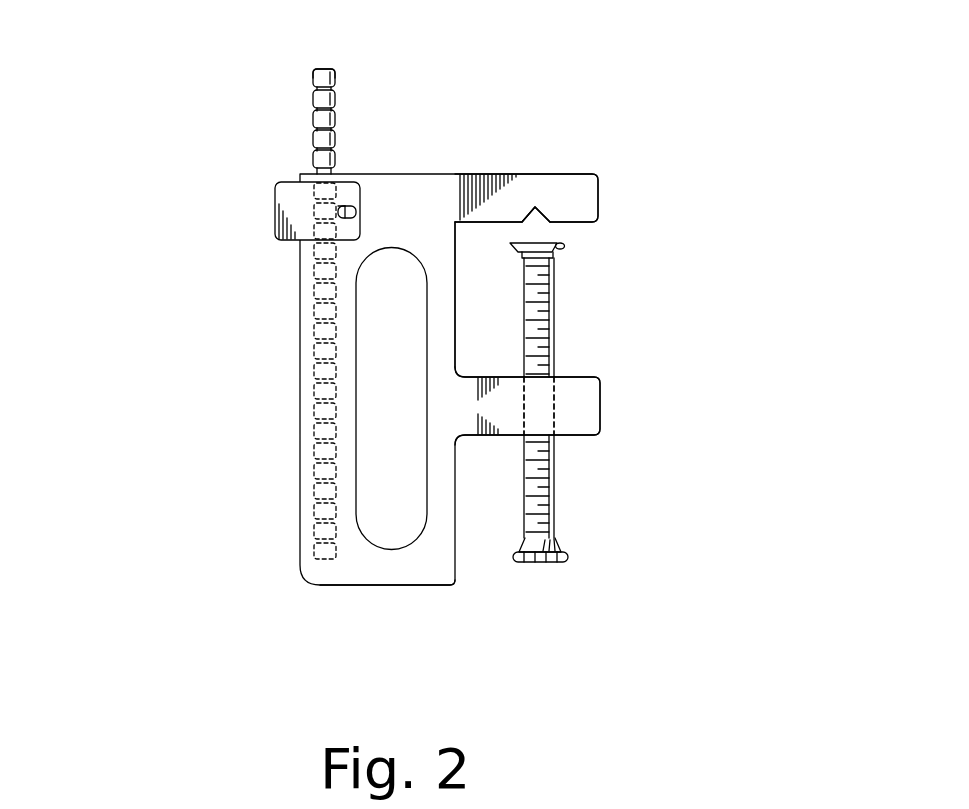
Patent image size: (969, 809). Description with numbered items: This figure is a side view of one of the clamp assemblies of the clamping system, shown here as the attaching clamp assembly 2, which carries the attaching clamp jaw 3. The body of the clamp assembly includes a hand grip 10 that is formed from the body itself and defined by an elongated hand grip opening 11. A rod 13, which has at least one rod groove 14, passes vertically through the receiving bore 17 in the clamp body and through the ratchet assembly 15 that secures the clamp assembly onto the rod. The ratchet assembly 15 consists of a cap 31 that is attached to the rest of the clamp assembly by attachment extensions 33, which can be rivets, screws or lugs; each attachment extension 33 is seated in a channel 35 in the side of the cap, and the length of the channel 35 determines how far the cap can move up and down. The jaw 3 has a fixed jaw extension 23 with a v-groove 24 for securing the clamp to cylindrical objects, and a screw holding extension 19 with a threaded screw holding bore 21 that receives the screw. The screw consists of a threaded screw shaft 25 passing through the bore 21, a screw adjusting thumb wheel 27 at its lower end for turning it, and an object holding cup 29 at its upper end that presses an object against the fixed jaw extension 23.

The attaching clamp assembly 2 is at (383, 585).
The attaching clamp jaw 3 is at (495, 308).
The hand grip 10 is at (357, 448).
The hand grip opening 11 is at (378, 402).
The rod 13 is at (307, 121).
The rod groove 14 is at (335, 107).
The ratchet assembly 15 is at (273, 204).
The receiving bore 17 is at (313, 323).
The screw holding extension 19 is at (600, 422).
The threaded screw holding bore 21 is at (525, 415).
The fixed jaw extension 23 is at (603, 190).
The v-groove 24 is at (537, 209).
The threaded screw shaft 25 is at (556, 317).
The screw adjusting thumb wheel 27 is at (570, 555).
The object holding cup 29 is at (564, 247).
The cap 31 is at (272, 217).
The attachment extension 33 is at (352, 212).
The channel 35 is at (341, 207).